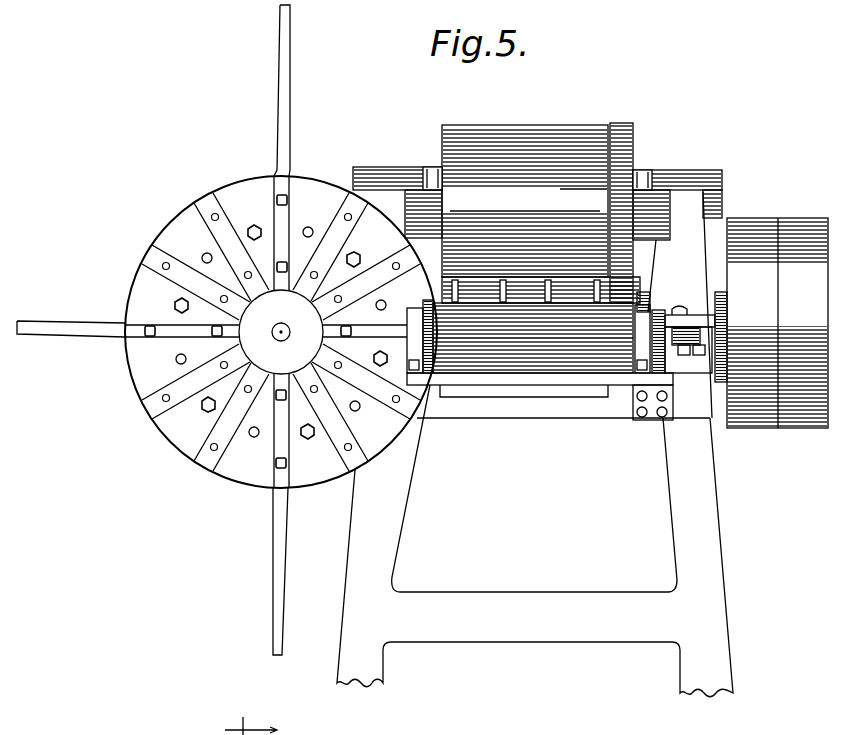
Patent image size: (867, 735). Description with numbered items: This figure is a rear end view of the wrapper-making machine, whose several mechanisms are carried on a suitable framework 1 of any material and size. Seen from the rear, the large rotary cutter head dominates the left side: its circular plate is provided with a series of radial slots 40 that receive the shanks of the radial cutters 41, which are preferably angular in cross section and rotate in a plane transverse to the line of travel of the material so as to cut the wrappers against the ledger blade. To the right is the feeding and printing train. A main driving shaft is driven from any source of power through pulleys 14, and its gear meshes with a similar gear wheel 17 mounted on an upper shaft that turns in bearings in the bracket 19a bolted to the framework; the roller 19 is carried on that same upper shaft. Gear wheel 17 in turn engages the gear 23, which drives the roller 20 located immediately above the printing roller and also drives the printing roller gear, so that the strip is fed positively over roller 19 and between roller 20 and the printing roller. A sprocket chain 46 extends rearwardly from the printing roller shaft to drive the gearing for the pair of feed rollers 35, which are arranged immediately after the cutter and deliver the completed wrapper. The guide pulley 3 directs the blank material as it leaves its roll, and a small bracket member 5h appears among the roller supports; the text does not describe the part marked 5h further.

The framework 1 is at (673, 483).
The guide pulley 3 is at (251, 718).
The bracket 5h is at (425, 300).
The pulleys 14 is at (798, 223).
The gear wheel 17 is at (630, 134).
The roller 19 is at (538, 133).
The bracket 19a is at (403, 162).
The roller 20 is at (525, 200).
The gear 23 is at (609, 203).
The pair of feed rollers 35 is at (544, 332).
The radial slots 40 is at (213, 192).
The radial cutters 41 is at (284, 106).
The sprocket chain 46 is at (718, 292).